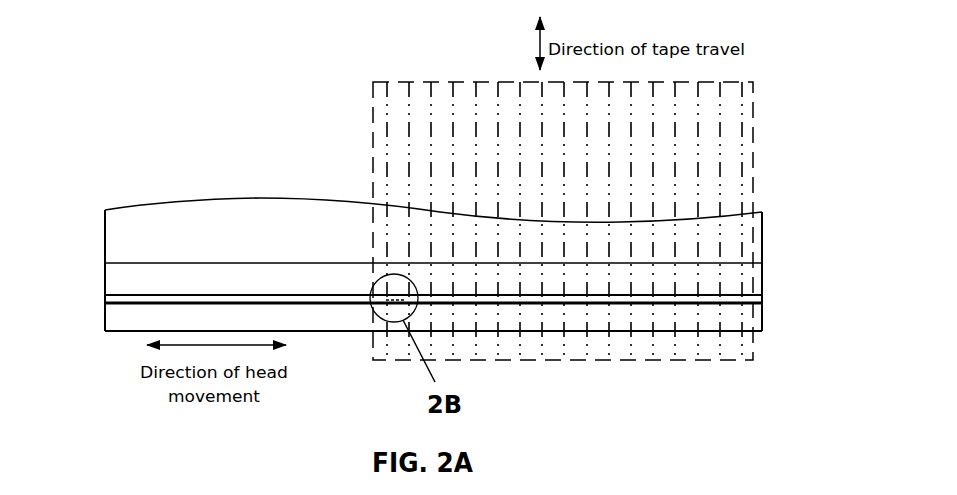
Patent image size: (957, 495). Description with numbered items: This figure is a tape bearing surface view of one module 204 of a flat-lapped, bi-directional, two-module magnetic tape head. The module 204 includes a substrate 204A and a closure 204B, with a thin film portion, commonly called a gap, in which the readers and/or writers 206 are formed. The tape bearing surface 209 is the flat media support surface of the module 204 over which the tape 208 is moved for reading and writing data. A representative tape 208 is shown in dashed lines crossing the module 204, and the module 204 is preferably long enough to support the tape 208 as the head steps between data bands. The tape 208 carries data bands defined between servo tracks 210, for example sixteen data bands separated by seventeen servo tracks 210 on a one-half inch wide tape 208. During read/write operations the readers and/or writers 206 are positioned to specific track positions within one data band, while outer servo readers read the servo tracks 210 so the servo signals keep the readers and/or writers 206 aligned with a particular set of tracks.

The module 204 is at (391, 230).
The substrate 204A is at (231, 198).
The closure 204B is at (104, 318).
The readers and/or writers 206 is at (366, 295).
The tape 208 is at (373, 88).
The tape bearing surface 209 is at (283, 282).
The servo tracks 210 is at (473, 159).